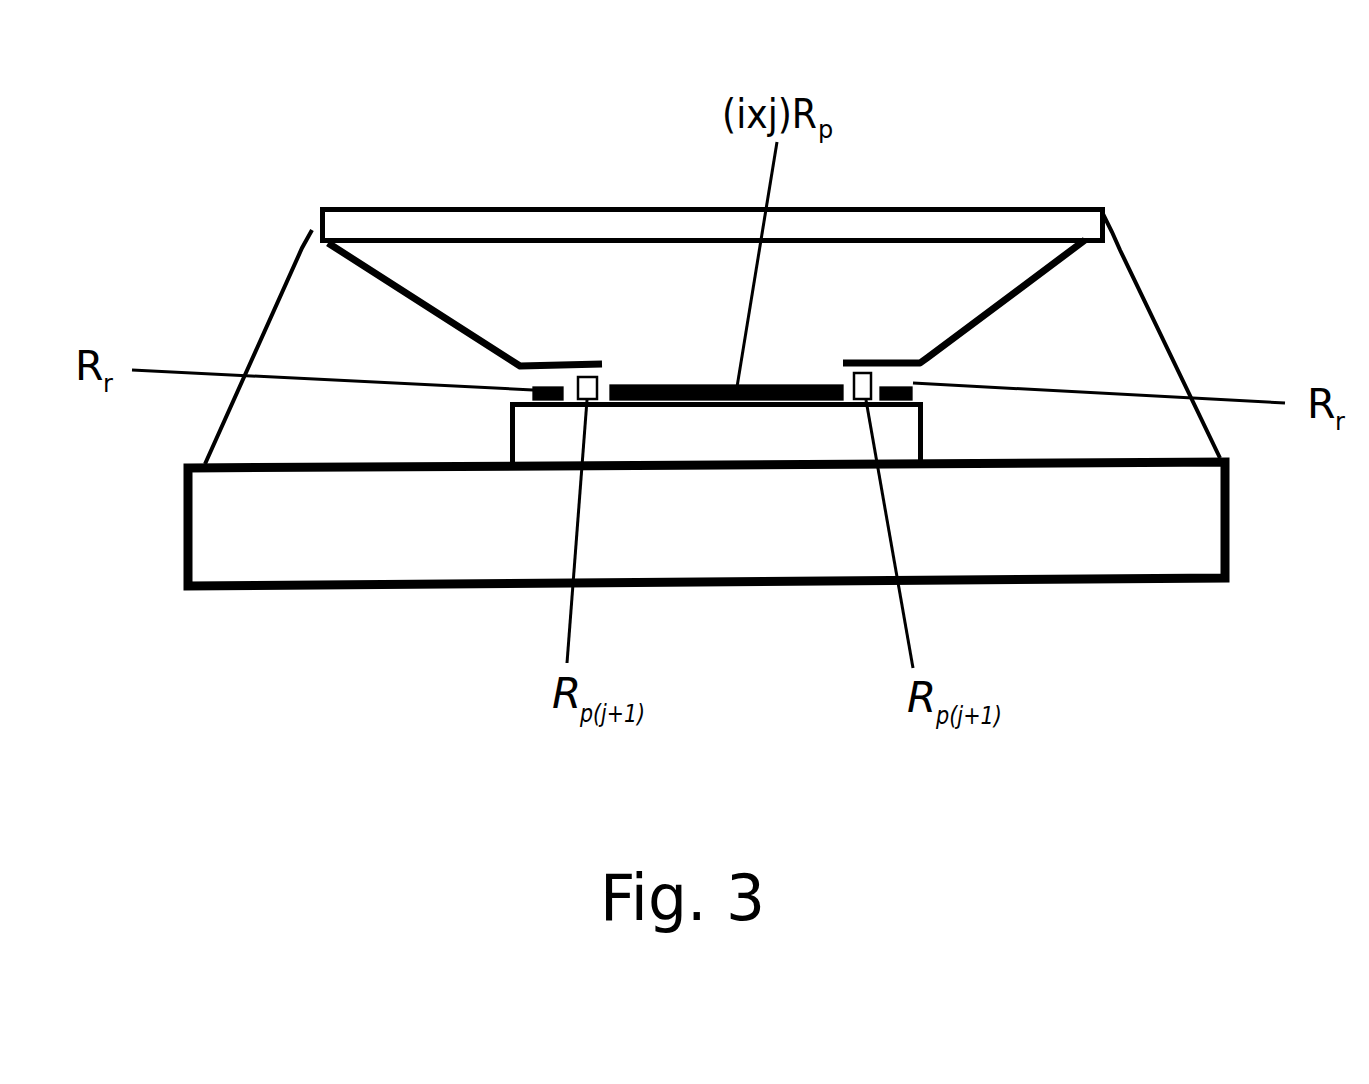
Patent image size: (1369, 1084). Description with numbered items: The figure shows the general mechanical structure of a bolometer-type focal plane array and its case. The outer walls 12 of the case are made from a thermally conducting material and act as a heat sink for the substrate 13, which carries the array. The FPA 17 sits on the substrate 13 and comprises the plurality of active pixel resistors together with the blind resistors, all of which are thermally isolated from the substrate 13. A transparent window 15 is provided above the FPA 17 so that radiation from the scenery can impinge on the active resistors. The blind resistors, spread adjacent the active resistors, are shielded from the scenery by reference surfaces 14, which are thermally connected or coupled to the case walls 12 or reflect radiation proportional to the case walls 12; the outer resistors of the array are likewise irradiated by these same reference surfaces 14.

The outer walls of the case 12 is at (1002, 543).
The substrate 13 is at (840, 422).
The reference surfaces 14 is at (388, 272).
The transparent window 15 is at (437, 430).
The FPA 17 is at (653, 387).